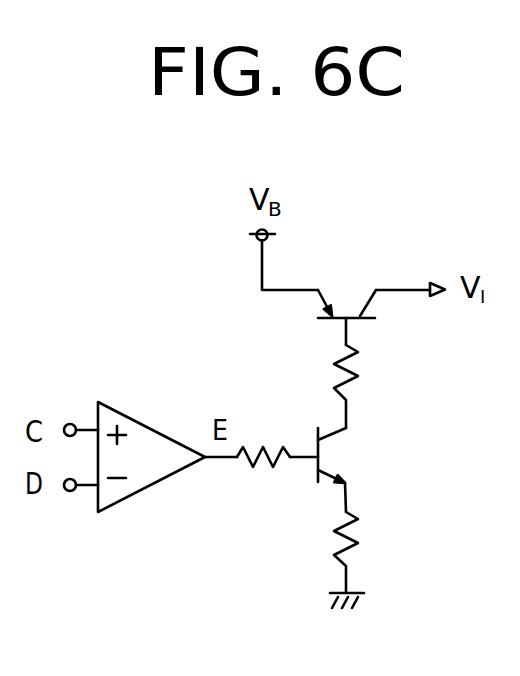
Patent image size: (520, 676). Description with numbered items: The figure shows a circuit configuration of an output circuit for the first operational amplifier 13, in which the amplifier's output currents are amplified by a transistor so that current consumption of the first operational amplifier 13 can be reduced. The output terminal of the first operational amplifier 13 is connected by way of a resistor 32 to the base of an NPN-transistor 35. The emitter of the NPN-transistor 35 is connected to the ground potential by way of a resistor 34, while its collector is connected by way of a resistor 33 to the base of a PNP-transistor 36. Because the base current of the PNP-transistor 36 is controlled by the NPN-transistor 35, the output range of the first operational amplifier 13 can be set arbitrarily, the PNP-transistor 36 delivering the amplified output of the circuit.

The first operational amplifier 13 is at (148, 488).
The resistor 32 is at (261, 441).
The resistor 33 is at (361, 373).
The resistor 34 is at (362, 541).
The NPN-transistor 35 is at (334, 458).
The PNP-transistor 36 is at (345, 302).